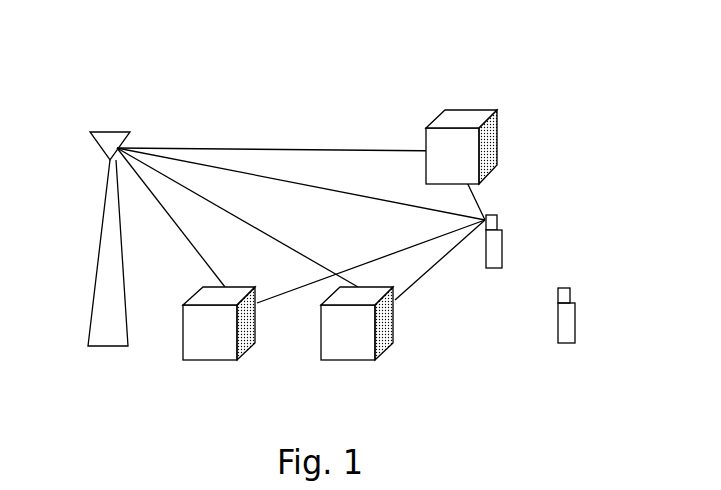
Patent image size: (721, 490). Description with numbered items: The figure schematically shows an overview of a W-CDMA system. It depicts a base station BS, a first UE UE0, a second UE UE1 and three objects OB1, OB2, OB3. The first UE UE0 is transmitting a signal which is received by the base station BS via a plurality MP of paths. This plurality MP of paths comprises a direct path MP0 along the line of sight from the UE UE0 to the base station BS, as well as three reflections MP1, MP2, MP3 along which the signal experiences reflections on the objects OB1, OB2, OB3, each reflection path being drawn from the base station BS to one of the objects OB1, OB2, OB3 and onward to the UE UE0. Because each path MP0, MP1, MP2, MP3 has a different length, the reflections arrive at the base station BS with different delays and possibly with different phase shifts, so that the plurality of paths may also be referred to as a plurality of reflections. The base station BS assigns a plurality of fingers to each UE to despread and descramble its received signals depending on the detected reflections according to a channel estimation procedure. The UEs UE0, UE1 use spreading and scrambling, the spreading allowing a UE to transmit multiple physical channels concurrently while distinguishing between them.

The base station BS is at (105, 253).
The plurality of paths MP is at (287, 95).
The direct path MP0 is at (325, 158).
The first reflection path MP1 is at (212, 148).
The second reflection path MP2 is at (300, 250).
The third reflection path MP3 is at (175, 232).
The first object OB1 is at (468, 118).
The second object OB2 is at (383, 343).
The third object OB3 is at (212, 345).
The first UE UE0 is at (499, 255).
The second UE UE1 is at (572, 328).